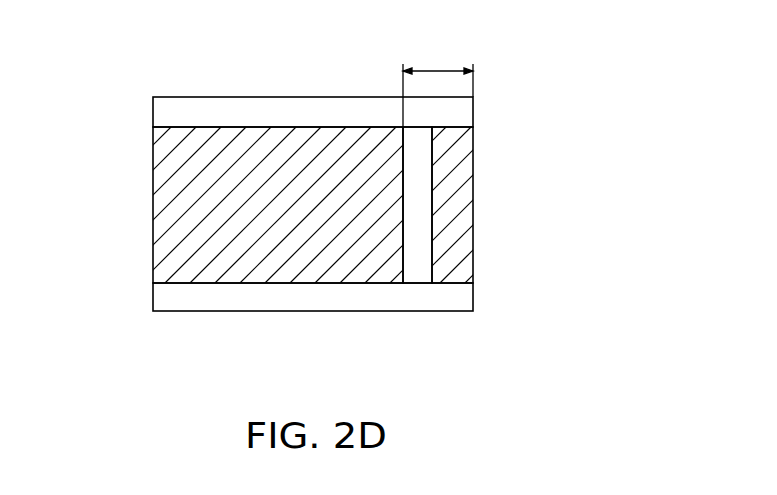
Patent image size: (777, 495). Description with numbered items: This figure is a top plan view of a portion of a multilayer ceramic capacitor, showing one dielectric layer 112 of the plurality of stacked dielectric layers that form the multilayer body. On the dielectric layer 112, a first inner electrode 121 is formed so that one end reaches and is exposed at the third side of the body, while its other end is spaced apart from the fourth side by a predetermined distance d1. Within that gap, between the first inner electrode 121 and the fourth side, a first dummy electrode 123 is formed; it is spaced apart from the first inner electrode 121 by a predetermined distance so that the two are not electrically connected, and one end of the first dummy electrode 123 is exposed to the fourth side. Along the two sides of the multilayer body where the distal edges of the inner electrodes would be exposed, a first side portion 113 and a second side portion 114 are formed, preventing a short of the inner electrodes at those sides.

The dielectric layer 112 is at (415, 275).
The first side portion 113 is at (313, 110).
The second side portion 114 is at (319, 298).
The first inner electrode 121 is at (170, 197).
The first dummy electrode 123 is at (455, 197).
The predetermined distance d1 is at (438, 86).